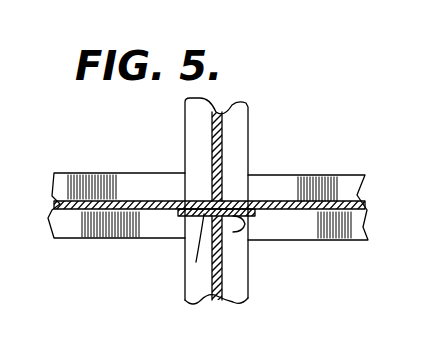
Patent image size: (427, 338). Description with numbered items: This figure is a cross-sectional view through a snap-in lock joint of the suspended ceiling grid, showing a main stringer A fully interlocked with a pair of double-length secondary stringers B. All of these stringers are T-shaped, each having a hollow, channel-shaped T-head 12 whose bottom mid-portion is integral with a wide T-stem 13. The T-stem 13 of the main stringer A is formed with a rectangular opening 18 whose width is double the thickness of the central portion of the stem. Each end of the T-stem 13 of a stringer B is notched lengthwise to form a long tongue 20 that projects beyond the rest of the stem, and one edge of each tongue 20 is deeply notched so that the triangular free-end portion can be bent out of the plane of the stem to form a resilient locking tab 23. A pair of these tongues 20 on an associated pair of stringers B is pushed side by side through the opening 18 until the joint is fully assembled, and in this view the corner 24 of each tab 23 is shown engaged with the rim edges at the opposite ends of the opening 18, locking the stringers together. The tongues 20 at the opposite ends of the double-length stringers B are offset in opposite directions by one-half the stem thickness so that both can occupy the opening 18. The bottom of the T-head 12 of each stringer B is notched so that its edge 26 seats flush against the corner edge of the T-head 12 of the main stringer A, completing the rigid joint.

The main stringer A is at (221, 105).
The double-length secondary stringer B is at (84, 171).
The T-head 12 is at (242, 126).
The T-stem 13 is at (54, 207).
The opening 18 is at (223, 180).
The tongue 20 is at (247, 197).
The resilient locking tab 23 is at (248, 224).
The corner of locking tab 24 is at (199, 252).
The edge of T-head 26 is at (244, 178).